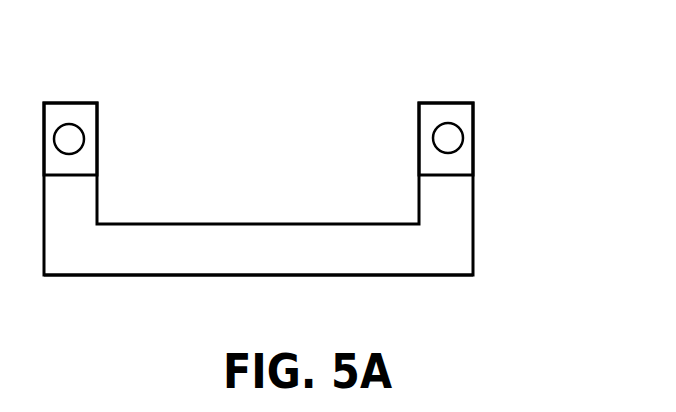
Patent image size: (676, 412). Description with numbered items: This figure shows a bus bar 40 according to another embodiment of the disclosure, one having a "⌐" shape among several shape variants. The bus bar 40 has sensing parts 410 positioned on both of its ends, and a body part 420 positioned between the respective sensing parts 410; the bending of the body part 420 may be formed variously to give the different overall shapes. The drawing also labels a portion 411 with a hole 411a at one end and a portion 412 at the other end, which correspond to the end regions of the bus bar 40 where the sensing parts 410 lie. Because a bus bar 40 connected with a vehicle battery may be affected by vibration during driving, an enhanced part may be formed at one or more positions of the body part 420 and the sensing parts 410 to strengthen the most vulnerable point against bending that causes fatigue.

The bus bar 40 is at (104, 43).
The sensing part 410 is at (393, 119).
The support portion 411 is at (472, 162).
The fastening hole 411a is at (447, 128).
The support portion 412 is at (97, 133).
The body part 420 is at (318, 267).